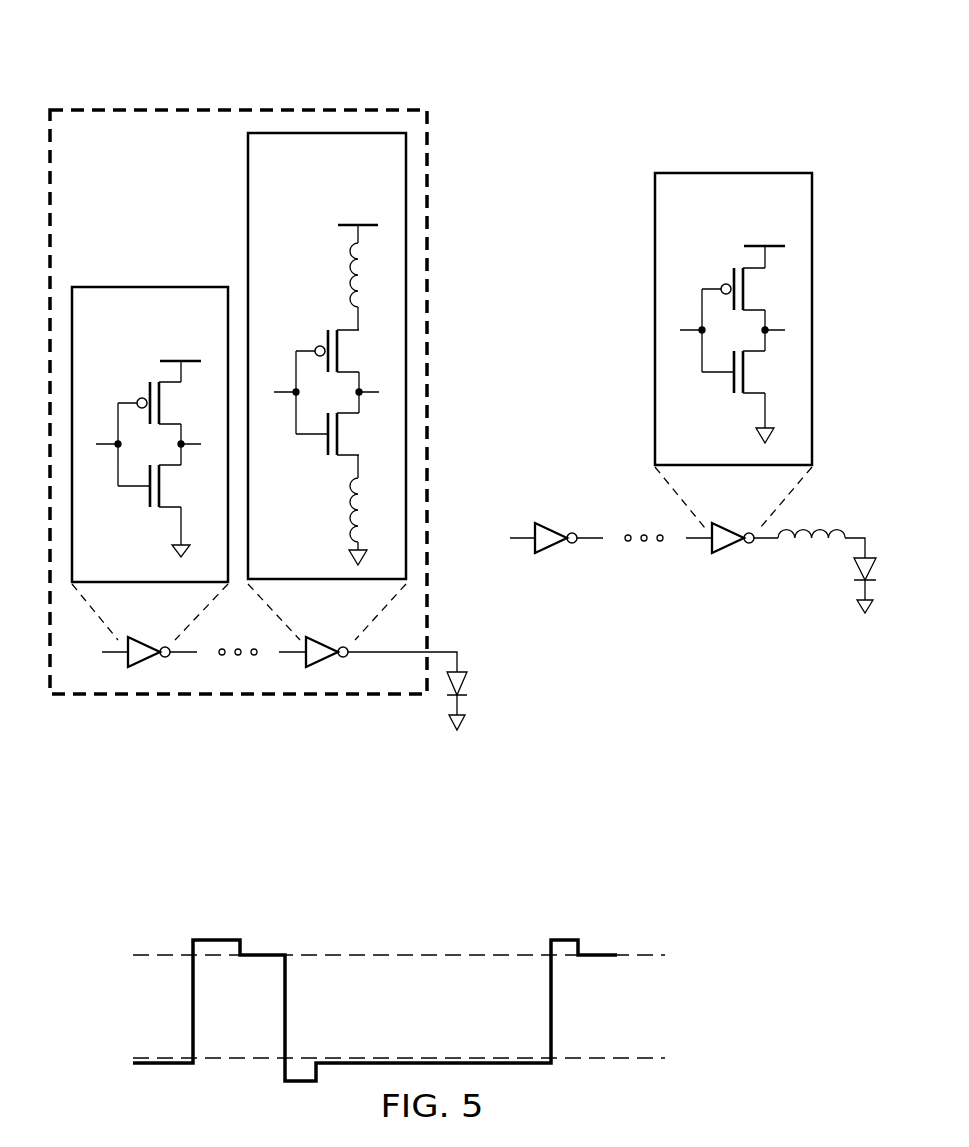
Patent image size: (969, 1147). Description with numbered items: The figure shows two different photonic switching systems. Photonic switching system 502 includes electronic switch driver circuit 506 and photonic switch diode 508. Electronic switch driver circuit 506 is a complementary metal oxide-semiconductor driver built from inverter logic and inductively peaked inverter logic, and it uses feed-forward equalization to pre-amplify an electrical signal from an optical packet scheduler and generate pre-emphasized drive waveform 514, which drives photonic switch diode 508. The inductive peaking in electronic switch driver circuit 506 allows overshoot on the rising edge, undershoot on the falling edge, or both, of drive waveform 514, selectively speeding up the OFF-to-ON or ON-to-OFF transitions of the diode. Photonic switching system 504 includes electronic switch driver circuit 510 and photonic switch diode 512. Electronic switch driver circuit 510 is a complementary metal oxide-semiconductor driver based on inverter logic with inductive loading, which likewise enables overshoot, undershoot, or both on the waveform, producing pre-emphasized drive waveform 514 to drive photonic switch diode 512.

The photonic switching system 502 is at (46, 93).
The photonic switching system 504 is at (505, 155).
The electronic switch driver circuit 506 is at (166, 727).
The photonic switch diode 508 is at (447, 738).
The electronic switch driver circuit 510 is at (687, 603).
The photonic switch diode 512 is at (855, 632).
The pre-emphasized drive waveform 514 is at (682, 934).